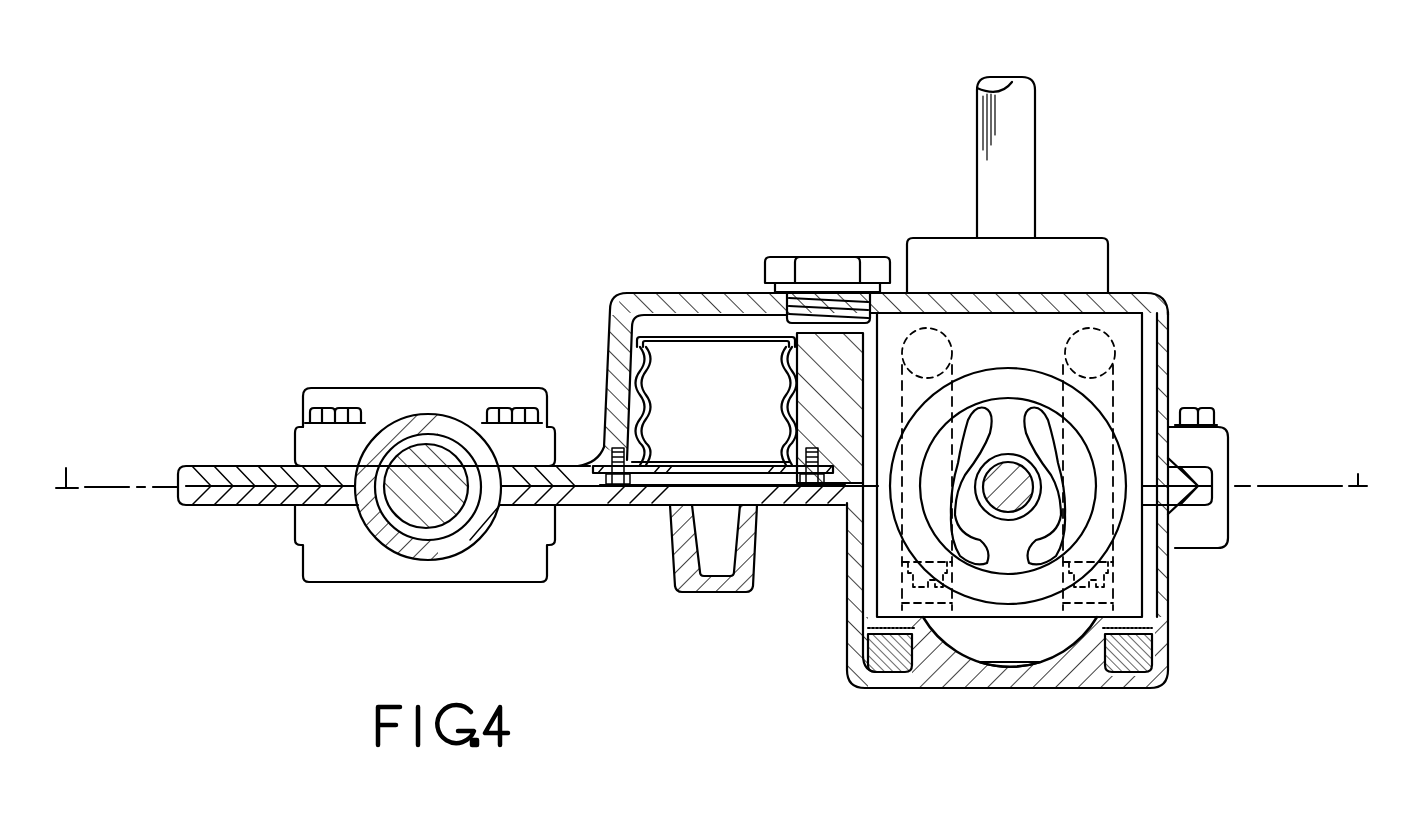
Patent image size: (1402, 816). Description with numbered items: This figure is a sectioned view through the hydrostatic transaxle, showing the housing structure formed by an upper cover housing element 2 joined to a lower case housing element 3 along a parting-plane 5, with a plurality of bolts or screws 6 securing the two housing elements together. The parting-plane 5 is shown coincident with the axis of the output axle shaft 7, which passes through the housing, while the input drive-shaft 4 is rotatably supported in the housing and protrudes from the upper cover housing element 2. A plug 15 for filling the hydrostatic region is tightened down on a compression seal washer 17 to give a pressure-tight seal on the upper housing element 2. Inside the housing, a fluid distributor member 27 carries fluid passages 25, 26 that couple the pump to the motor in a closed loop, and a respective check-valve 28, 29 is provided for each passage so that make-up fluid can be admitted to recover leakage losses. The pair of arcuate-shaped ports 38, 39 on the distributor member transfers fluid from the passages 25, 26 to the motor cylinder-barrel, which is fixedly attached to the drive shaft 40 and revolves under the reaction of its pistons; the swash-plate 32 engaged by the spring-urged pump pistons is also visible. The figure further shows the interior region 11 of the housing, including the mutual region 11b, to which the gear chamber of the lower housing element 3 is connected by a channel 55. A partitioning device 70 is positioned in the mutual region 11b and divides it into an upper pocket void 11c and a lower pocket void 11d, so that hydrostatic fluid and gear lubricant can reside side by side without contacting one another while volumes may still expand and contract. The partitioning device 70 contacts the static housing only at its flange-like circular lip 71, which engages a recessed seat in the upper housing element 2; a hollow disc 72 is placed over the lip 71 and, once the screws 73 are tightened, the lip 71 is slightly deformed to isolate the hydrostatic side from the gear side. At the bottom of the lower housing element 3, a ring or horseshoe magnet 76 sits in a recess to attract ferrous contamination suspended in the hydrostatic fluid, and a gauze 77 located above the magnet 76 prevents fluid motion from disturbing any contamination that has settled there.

The upper cover housing element 2 is at (1020, 280).
The lower case housing element 3 is at (958, 665).
The input drive-shaft 4 is at (1014, 105).
The parting-plane 5 is at (712, 453).
The bolts or screws 6 is at (326, 414).
The output axle shaft 7 is at (425, 478).
The mounting plate 11 is at (695, 485).
The mutual region 11b is at (1198, 478).
The upper pocket void 11c is at (705, 328).
The lower pocket void 11d is at (685, 450).
The plug 15 is at (822, 280).
The compression seal washer 17 is at (897, 285).
The fluid passage 25 is at (1076, 369).
The fluid passage 26 is at (913, 369).
The fluid distributor member 27 is at (1023, 349).
The check-valve 28 is at (1085, 592).
The check-valve 29 is at (930, 580).
The swash-plate 32 is at (1045, 645).
The arcuate-shaped port 38 is at (1075, 488).
The arcuate-shaped port 39 is at (968, 422).
The drive shaft 40 is at (1012, 485).
The channel 55 is at (720, 530).
The partitioning device 70 is at (755, 338).
The flange-like circular lip 71 is at (793, 428).
The hollow disc 72 is at (762, 477).
The screws 73 is at (604, 452).
The ring or horseshoe magnet 76 is at (890, 660).
The gauze 77 is at (1130, 668).